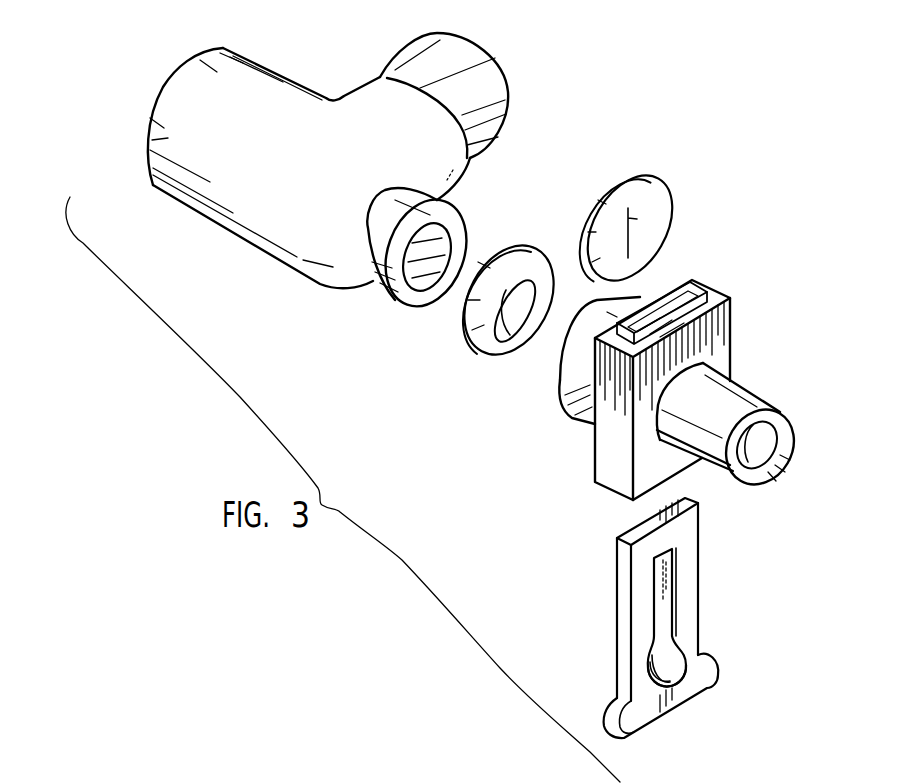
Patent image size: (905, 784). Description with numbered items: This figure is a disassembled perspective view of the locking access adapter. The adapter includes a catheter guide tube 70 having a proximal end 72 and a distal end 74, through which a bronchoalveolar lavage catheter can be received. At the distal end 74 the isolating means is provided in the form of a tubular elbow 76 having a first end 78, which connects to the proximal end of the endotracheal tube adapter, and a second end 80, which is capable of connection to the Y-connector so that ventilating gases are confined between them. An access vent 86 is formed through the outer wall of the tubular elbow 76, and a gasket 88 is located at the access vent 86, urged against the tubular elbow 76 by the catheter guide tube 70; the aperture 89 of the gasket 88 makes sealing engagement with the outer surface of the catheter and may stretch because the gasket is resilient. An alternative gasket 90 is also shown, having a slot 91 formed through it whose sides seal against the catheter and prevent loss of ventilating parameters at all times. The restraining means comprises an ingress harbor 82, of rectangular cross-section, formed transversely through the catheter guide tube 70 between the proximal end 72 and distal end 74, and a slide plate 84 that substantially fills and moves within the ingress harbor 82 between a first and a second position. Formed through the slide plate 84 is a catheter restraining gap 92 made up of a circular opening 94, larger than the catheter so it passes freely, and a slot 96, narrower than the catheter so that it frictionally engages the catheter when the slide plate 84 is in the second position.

The catheter guide tube 70 is at (597, 410).
The proximal end 72 is at (740, 474).
The distal end 74 is at (560, 381).
The tubular elbow 76 is at (277, 230).
The first end 78 is at (160, 139).
The second end 80 is at (490, 95).
The ingress harbor 82 is at (693, 297).
The slide plate 84 is at (685, 605).
The access vent 86 is at (423, 277).
The gasket 88 is at (494, 342).
The aperture 89 is at (533, 305).
The gasket 90 is at (657, 232).
The slot 91 is at (637, 218).
The catheter restraining gap 92 is at (647, 565).
The circular opening 94 is at (672, 668).
The slot 96 is at (670, 580).